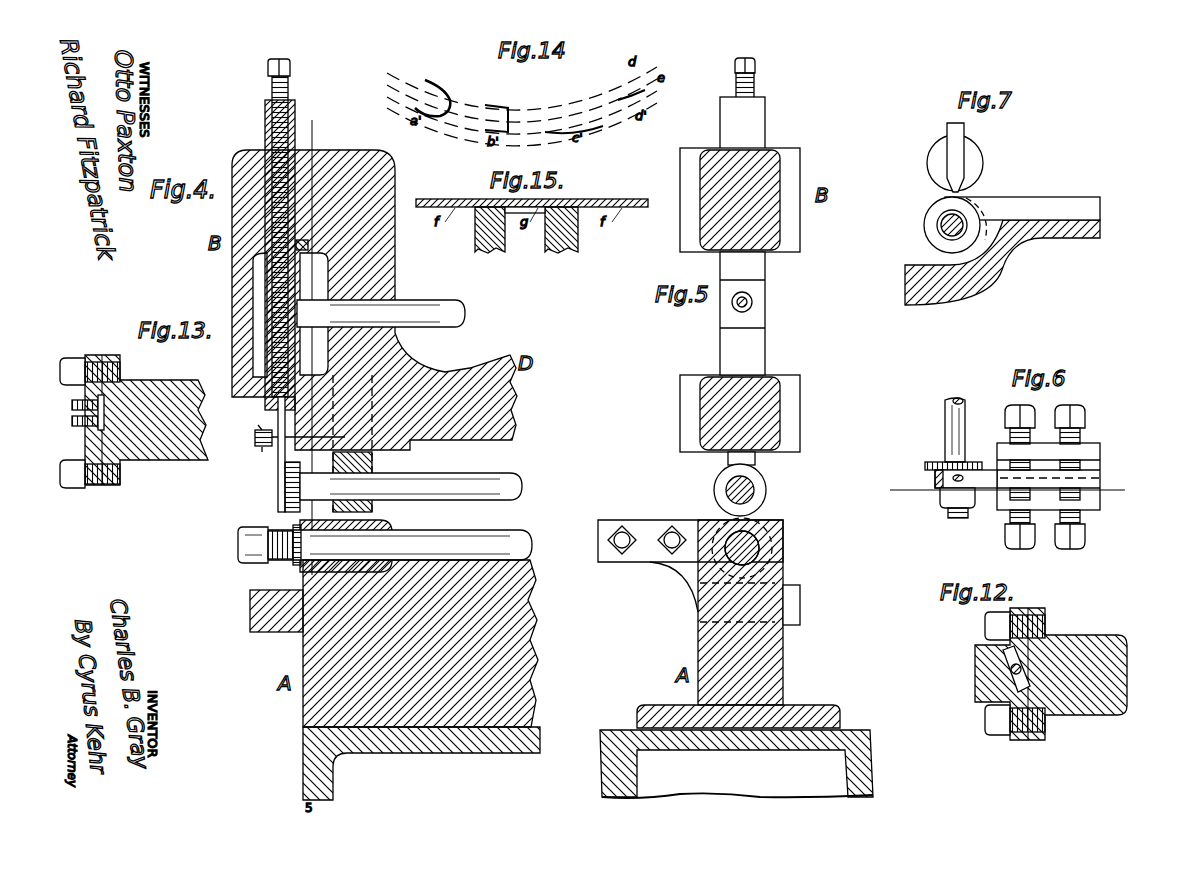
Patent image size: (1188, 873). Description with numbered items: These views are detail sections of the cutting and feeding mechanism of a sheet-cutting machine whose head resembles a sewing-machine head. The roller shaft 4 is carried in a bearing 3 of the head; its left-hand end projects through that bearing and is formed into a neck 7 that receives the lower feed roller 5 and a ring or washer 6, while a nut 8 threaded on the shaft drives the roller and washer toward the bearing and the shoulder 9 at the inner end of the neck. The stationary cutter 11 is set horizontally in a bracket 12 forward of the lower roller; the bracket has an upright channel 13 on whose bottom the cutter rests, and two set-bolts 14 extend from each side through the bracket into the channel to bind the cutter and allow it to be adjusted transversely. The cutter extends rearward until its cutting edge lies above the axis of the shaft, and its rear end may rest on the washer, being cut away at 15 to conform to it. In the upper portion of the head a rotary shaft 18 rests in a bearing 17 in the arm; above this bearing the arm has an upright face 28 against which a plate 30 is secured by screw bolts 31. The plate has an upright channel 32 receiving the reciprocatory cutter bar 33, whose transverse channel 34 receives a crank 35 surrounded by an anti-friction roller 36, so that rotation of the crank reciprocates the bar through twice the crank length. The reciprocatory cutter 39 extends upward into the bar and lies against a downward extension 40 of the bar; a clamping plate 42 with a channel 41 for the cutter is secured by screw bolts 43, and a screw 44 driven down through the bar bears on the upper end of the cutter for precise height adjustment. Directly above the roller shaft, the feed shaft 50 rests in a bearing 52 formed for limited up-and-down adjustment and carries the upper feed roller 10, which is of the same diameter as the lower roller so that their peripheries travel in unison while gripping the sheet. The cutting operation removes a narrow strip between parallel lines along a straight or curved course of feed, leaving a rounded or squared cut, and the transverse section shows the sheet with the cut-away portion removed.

In FIG. 4, the bearing 3 is at (393, 527).
In FIG. 5, the bearing 3 is at (765, 553).
In FIG. 4, the roller shaft 4 is at (488, 541).
In FIG. 5, the roller shaft 4 is at (752, 535).
In FIG. 6, the roller shaft 4 is at (945, 418).
In FIG. 4, the roller 5 is at (313, 339).
In FIG. 7, the roller 5 is at (930, 214).
In FIG. 6, the roller 5 is at (934, 462).
In FIG. 4, the ring or washer 6 is at (278, 564).
In FIG. 7, the ring or washer 6 is at (948, 240).
In FIG. 6, the ring or washer 6 is at (935, 479).
In FIG. 4, the neck 7 is at (236, 545).
In FIG. 7, the neck 7 is at (941, 228).
In FIG. 6, the neck 7 is at (957, 519).
In FIG. 4, the nut 8 is at (258, 562).
In FIG. 6, the nut 8 is at (942, 500).
In FIG. 4, the shoulder 9 is at (297, 566).
In FIG. 6, the shoulder 9 is at (968, 462).
In FIG. 4, the upper feed roller 10 is at (302, 480).
In FIG. 5, the upper feed roller 10 is at (714, 488).
In FIG. 7, the upper feed roller 10 is at (928, 163).
In FIG. 15, the stationary cutter 11 is at (548, 252).
In FIG. 7, the stationary cutter 11 is at (1100, 210).
In FIG. 6, the stationary cutter 11 is at (1090, 478).
In FIG. 5, the bracket 12 is at (600, 545).
In FIG. 4, the upright channel 13 is at (300, 443).
In FIG. 6, the upright channel 13 is at (1092, 494).
In FIG. 5, the set-bolts 14 is at (672, 533).
In FIG. 6, the set-bolts 14 is at (1068, 408).
In FIG. 7, the cut-away portion 15 is at (970, 206).
In FIG. 4, the bearing 17 is at (397, 300).
In FIG. 4, the rotary shaft 18 is at (438, 300).
In FIG. 5, the face 28 is at (801, 165).
In FIG. 4, the plate 30 is at (233, 292).
In FIG. 12, the plate 30 is at (1000, 668).
In FIG. 13, the plate 30 is at (95, 355).
In FIG. 4, the screw bolts 31 is at (289, 110).
In FIG. 12, the screw bolts 31 is at (986, 626).
In FIG. 13, the screw bolts 31 is at (62, 372).
In FIG. 12, the upright channel 32 is at (977, 648).
In FIG. 4, the reciprocatory cutter bar 33 is at (266, 117).
In FIG. 5, the reciprocatory cutter bar 33 is at (752, 120).
In FIG. 12, the reciprocatory cutter bar 33 is at (1006, 684).
In FIG. 4, the transverse channel 34 is at (305, 252).
In FIG. 5, the transverse channel 34 is at (753, 300).
In FIG. 4, the crank 35 is at (302, 258).
In FIG. 5, the crank 35 is at (748, 310).
In FIG. 4, the anti-friction roller 36 is at (307, 336).
In FIG. 5, the anti-friction roller 36 is at (733, 305).
In FIG. 4, the reciprocatory cutter 39 is at (281, 489).
In FIG. 5, the reciprocatory cutter 39 is at (757, 459).
In FIG. 7, the reciprocatory cutter 39 is at (966, 136).
In FIG. 13, the reciprocatory cutter 39 is at (102, 415).
In FIG. 4, the downward extension 40 is at (299, 481).
In FIG. 5, the downward extension 40 is at (726, 457).
In FIG. 13, the downward extension 40 is at (102, 420).
In FIG. 13, the channel 41 is at (72, 424).
In FIG. 4, the clamping plate 42 is at (254, 456).
In FIG. 13, the clamping plate 42 is at (72, 412).
In FIG. 4, the screw bolts 43 is at (252, 421).
In FIG. 13, the screw bolts 43 is at (73, 420).
In FIG. 4, the screw 44 is at (291, 64).
In FIG. 5, the screw 44 is at (750, 88).
In FIG. 4, the feed shaft 50 is at (468, 475).
In FIG. 5, the feed shaft 50 is at (756, 487).
In FIG. 4, the bearing 52 is at (372, 472).